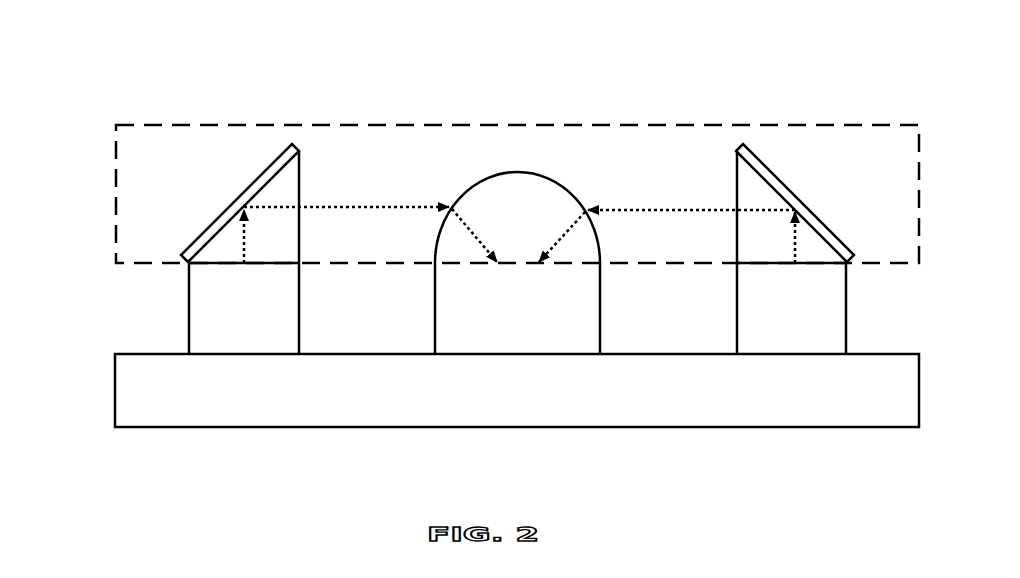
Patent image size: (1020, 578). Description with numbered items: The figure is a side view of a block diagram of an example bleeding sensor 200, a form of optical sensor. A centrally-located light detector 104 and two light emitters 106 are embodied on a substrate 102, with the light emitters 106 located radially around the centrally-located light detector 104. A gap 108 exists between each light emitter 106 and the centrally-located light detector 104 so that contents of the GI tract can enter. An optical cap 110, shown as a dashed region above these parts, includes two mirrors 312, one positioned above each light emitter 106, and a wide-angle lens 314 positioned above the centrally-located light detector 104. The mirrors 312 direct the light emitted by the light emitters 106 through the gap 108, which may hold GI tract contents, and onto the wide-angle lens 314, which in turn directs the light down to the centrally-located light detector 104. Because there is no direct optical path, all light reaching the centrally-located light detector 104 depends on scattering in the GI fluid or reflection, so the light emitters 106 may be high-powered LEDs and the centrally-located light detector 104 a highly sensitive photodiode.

The bleeding sensor 200 is at (161, 72).
The substrate 102 is at (517, 390).
The centrally-located light detector 104 is at (517, 263).
The light emitters 106 is at (517, 252).
The gap 108 is at (366, 223).
The optical cap 110 is at (481, 194).
The mirrors 312 is at (268, 146).
The wide-angle lens 314 is at (519, 228).